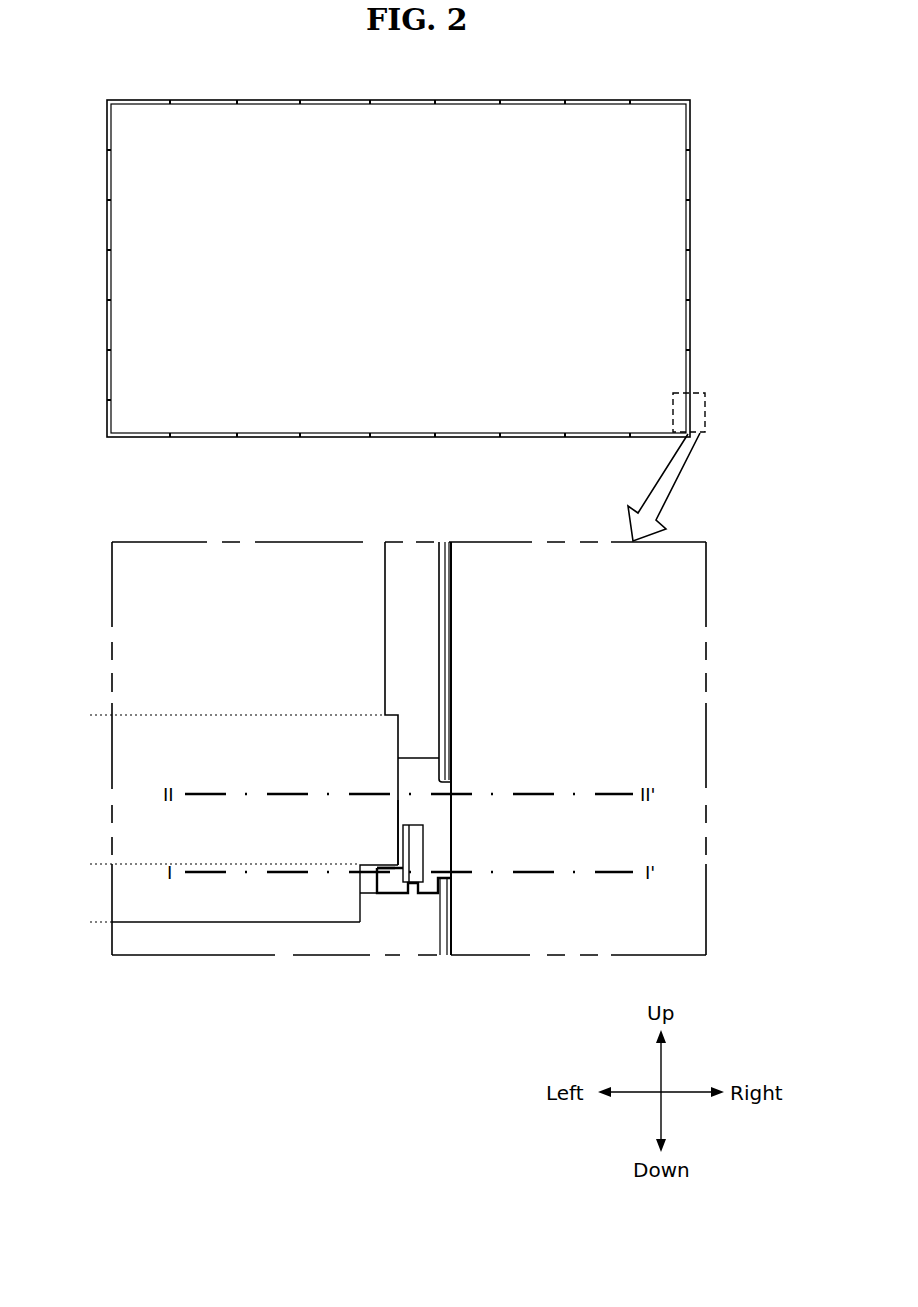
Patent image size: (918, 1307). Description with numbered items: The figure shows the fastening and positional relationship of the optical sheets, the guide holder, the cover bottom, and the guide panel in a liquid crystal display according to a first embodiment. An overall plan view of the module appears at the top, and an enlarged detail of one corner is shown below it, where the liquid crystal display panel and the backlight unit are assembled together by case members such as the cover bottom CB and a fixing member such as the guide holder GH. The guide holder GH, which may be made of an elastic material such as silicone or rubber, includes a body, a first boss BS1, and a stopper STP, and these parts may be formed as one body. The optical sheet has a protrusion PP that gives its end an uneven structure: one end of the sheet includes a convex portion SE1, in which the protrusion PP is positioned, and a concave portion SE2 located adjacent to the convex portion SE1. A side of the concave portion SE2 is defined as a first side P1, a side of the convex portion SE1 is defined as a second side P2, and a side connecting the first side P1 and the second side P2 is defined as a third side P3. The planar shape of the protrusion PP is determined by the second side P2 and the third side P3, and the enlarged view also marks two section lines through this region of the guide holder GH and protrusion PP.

The cover bottom CB is at (445, 708).
The protrusion PP is at (378, 763).
The first boss BS1 is at (440, 826).
The stopper STP is at (395, 893).
The guide holder GH is at (430, 880).
The first side P1 is at (363, 894).
The second side P2 is at (398, 815).
The third side P3 is at (379, 870).
The convex portion SE1 is at (99, 715).
The concave portion SE2 is at (99, 922).